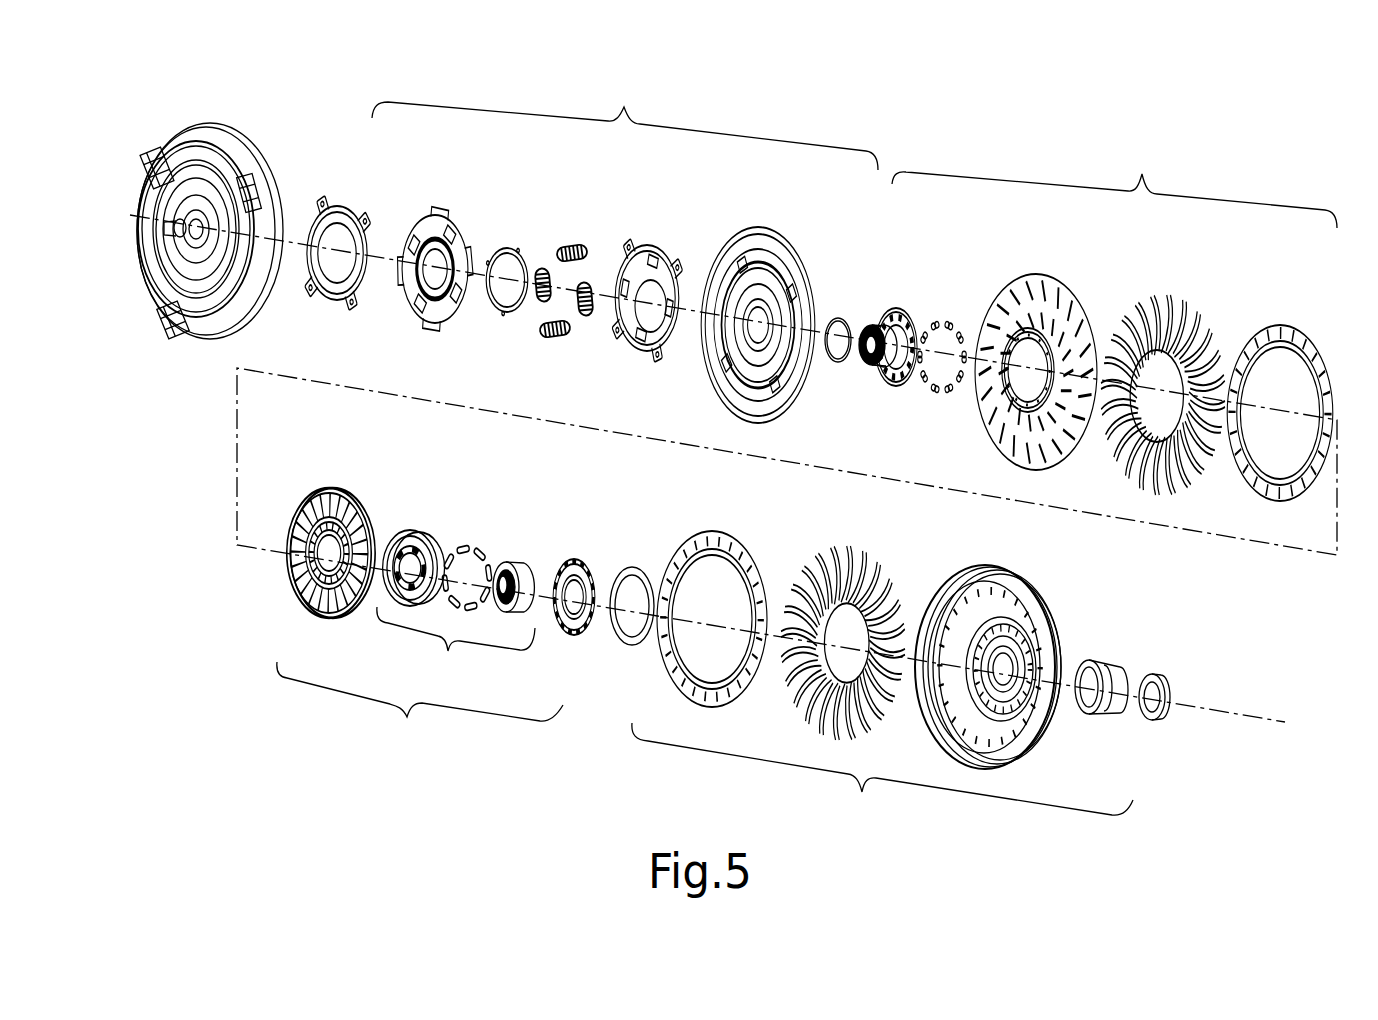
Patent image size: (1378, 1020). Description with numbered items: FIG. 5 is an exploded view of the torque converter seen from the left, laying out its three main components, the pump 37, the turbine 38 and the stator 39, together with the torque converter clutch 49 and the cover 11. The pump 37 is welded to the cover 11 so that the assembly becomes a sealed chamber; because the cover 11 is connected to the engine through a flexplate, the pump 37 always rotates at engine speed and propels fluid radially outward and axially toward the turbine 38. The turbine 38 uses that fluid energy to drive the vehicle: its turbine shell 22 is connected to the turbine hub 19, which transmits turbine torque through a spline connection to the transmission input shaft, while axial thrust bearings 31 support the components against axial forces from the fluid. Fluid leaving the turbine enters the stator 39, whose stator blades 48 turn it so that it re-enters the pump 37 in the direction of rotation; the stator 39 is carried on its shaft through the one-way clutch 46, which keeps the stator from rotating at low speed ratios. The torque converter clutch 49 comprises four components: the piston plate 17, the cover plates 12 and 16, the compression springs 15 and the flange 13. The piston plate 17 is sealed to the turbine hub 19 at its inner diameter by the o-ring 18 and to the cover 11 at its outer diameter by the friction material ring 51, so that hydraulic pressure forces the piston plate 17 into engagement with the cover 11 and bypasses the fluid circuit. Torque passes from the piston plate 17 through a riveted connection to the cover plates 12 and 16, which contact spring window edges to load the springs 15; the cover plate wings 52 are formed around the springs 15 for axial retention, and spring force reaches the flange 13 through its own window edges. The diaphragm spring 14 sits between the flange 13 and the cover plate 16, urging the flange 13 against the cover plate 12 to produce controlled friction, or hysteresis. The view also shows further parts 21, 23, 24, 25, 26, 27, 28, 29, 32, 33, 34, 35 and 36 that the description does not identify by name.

The cover 11 is at (280, 158).
The cover plate 12 is at (383, 223).
The cover plate wings 52 is at (340, 197).
The flange 13 is at (460, 200).
The diaphragm spring 14 is at (520, 243).
The compression springs 15 is at (588, 240).
The cover plate 16 is at (672, 247).
The friction material ring 51 is at (785, 293).
The piston plate 17 is at (803, 233).
The o-ring 18 is at (853, 303).
The turbine hub 19 is at (905, 295).
The thrust bearing 21 is at (957, 310).
The turbine shell 22 is at (1073, 268).
The turbine blades 23 is at (1198, 287).
The turbine core ring 24 is at (1297, 317).
The turbine 38 is at (1114, 179).
The torque converter clutch 49 is at (625, 120).
The stator blades 48 is at (350, 514).
The stator 25 is at (363, 487).
The inner race 26 is at (427, 518).
The rollers 27 is at (478, 537).
The bushing 28 is at (530, 557).
The thrust washer 29 is at (590, 547).
The axial thrust bearings 31 is at (648, 558).
The impeller core ring 32 is at (770, 537).
The impeller blades 33 is at (903, 552).
The impeller shell 34 is at (1063, 587).
The pump hub bushing 35 is at (1120, 647).
The seal ring 36 is at (1177, 662).
The one-way clutch 46 is at (456, 650).
The stator 39 is at (420, 714).
The pump 37 is at (882, 783).